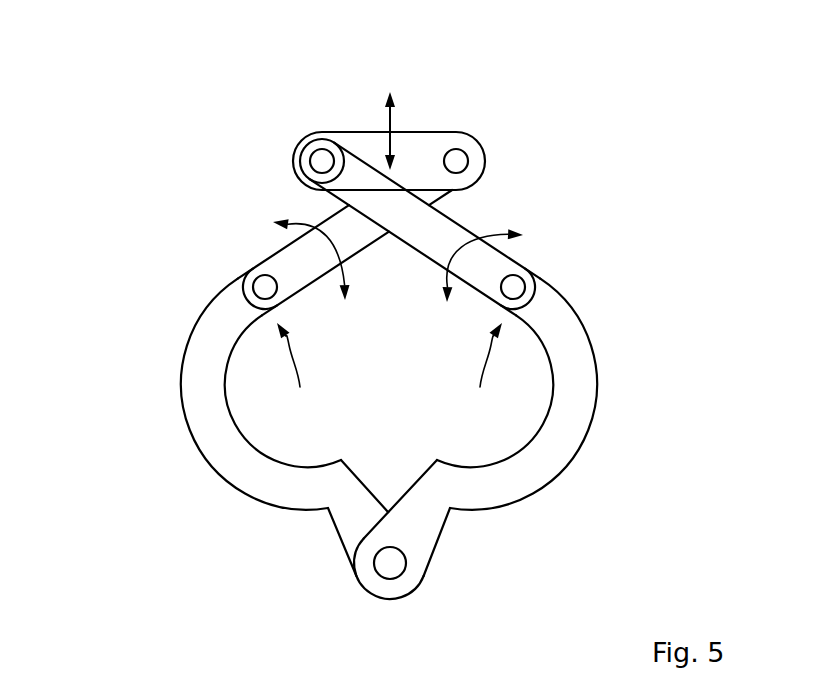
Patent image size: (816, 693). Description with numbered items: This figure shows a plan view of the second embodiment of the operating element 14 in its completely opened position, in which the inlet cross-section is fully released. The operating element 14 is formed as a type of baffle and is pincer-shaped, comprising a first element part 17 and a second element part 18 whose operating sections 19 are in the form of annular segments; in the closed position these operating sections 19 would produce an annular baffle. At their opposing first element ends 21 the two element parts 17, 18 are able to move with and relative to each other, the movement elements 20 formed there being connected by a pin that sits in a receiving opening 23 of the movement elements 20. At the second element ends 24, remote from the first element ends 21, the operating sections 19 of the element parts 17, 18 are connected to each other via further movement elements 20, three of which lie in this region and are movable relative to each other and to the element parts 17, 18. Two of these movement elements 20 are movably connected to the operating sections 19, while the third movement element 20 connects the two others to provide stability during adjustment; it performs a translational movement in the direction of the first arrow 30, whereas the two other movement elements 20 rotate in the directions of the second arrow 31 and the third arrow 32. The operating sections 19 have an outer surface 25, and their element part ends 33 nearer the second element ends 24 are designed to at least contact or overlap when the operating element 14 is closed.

The operating element 14 is at (647, 226).
The first element part 17 is at (611, 370).
The second element part 18 is at (168, 370).
The operating sections 19 is at (208, 422).
The movement elements 20 is at (473, 158).
The first element ends 21 is at (338, 603).
The receiving opening 23 is at (390, 565).
The second element ends 24 is at (343, 104).
The outer surface 25 is at (203, 319).
The first arrow 30 is at (392, 118).
The second arrow 31 is at (297, 222).
The third arrow 32 is at (507, 244).
The element part ends 33 is at (389, 369).